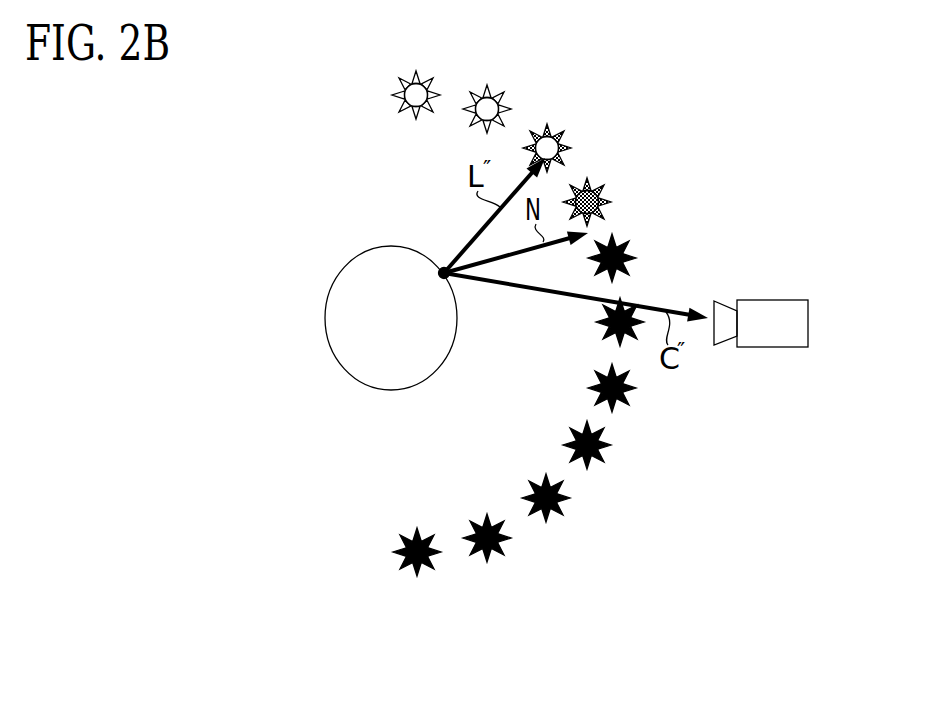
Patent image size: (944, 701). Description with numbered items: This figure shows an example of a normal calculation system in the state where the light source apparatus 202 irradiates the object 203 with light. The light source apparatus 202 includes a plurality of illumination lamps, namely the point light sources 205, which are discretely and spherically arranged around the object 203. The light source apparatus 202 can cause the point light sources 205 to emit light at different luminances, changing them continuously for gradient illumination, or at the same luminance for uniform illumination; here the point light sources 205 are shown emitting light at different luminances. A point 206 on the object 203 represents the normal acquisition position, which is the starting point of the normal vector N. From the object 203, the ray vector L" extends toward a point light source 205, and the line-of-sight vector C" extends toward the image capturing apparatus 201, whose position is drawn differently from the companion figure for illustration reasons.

The image capturing apparatus 201 is at (809, 320).
The light source apparatus 202 is at (549, 565).
The object 203 is at (325, 318).
The point light sources 205 is at (417, 71).
The point 206 is at (442, 268).